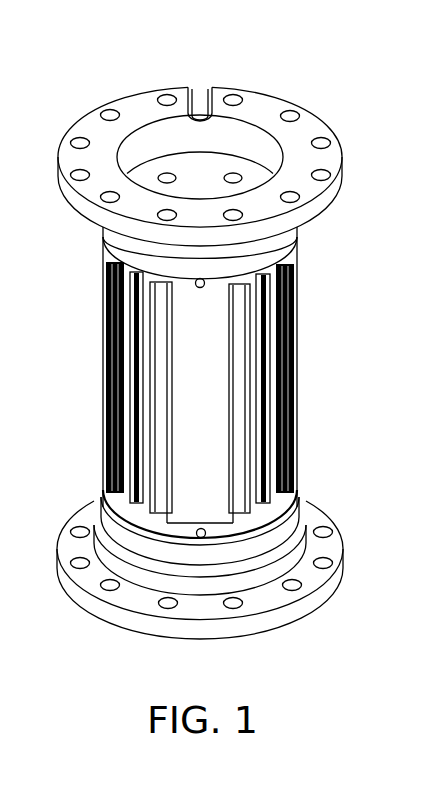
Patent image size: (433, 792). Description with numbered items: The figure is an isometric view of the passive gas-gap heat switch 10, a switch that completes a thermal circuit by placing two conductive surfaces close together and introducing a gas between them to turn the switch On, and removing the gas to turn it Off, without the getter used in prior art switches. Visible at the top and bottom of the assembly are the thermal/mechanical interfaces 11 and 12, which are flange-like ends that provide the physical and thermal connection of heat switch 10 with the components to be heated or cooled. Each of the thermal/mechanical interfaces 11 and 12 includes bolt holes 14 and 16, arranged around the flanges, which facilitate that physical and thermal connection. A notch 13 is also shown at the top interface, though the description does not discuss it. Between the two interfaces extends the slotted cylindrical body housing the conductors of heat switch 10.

The passive gas-gap heat switch 10 is at (267, 84).
The thermal/mechanical interface 11 is at (313, 123).
The thermal/mechanical interface 12 is at (102, 610).
The notch 13 is at (200, 100).
The bolt holes 14 is at (293, 583).
The bolt holes 16 is at (293, 195).